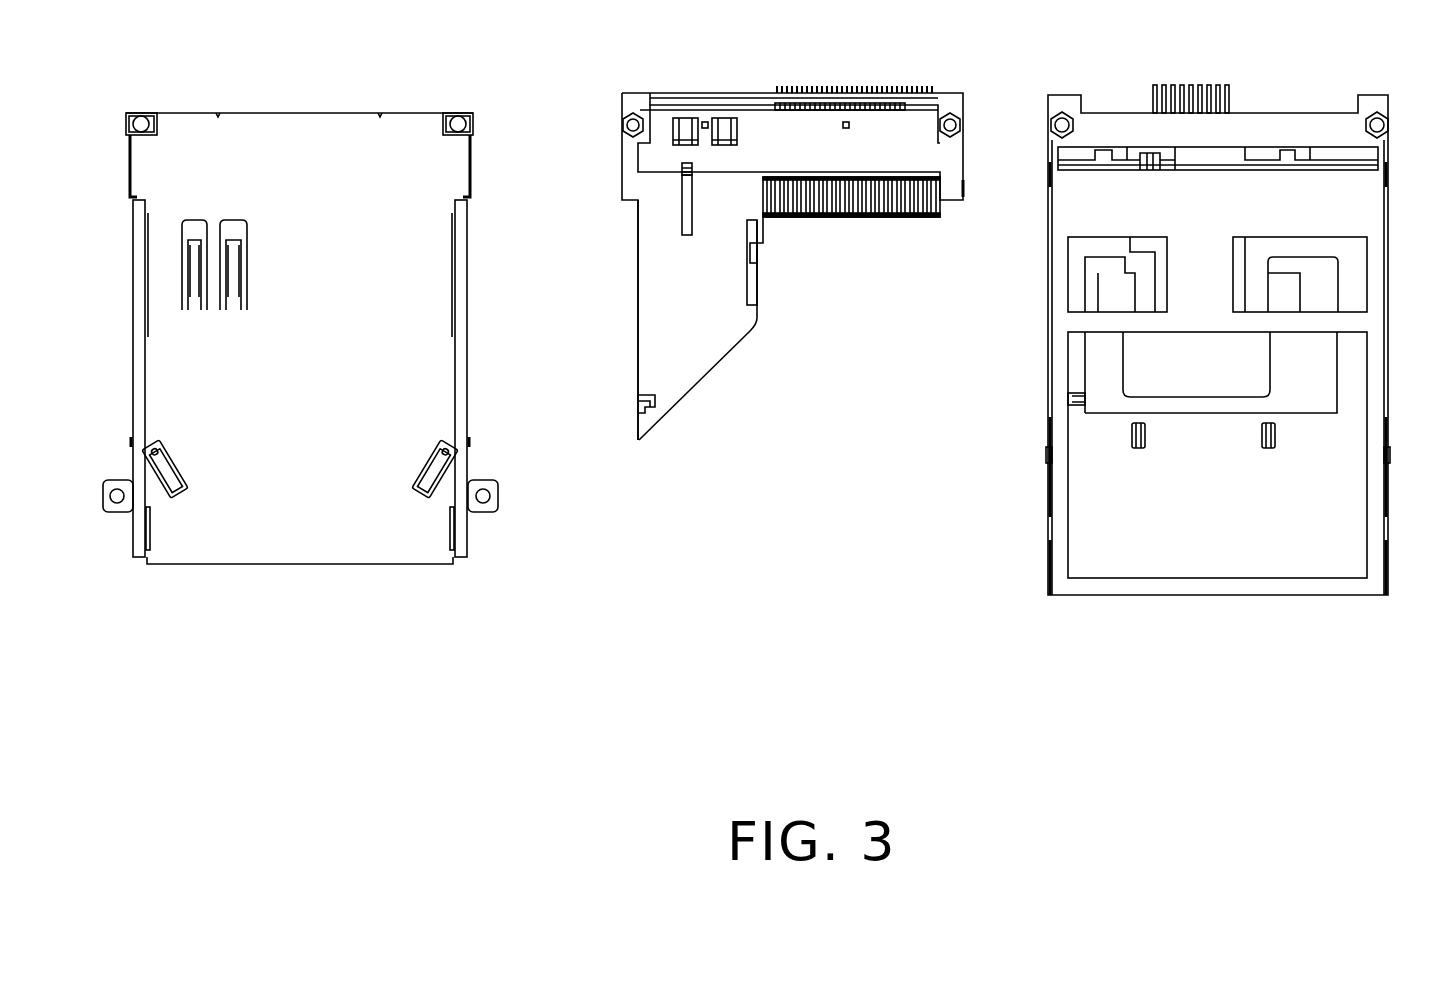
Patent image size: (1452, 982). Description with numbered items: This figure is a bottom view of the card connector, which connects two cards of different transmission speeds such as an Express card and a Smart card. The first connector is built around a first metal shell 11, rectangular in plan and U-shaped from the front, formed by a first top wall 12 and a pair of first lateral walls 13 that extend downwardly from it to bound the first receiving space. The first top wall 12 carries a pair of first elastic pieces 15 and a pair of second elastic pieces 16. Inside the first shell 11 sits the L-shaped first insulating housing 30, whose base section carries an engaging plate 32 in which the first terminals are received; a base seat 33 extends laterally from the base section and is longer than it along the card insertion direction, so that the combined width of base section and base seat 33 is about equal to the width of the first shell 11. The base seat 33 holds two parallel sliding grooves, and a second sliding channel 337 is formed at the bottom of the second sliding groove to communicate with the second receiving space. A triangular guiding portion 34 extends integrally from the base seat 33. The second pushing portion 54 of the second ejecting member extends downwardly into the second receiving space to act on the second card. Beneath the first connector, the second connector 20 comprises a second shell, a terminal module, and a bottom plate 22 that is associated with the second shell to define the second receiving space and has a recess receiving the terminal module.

The first metal shell 11 is at (313, 483).
The first top wall 12 is at (285, 157).
The first lateral walls 13 is at (467, 235).
The first elastic pieces 15 is at (165, 472).
The second elastic pieces 16 is at (193, 267).
The second connector 20 is at (1343, 208).
The bottom plate 22 is at (1212, 205).
The first insulating housing 30 is at (877, 142).
The engaging plate 32 is at (880, 193).
The base seat 33 is at (665, 283).
The guiding portion 34 is at (690, 367).
The second pushing portion 54 is at (682, 168).
The second sliding channel 337 is at (683, 205).